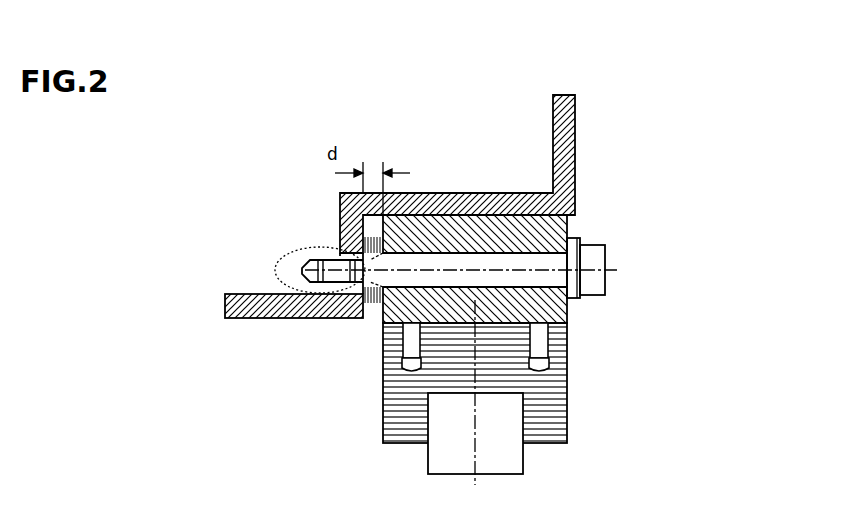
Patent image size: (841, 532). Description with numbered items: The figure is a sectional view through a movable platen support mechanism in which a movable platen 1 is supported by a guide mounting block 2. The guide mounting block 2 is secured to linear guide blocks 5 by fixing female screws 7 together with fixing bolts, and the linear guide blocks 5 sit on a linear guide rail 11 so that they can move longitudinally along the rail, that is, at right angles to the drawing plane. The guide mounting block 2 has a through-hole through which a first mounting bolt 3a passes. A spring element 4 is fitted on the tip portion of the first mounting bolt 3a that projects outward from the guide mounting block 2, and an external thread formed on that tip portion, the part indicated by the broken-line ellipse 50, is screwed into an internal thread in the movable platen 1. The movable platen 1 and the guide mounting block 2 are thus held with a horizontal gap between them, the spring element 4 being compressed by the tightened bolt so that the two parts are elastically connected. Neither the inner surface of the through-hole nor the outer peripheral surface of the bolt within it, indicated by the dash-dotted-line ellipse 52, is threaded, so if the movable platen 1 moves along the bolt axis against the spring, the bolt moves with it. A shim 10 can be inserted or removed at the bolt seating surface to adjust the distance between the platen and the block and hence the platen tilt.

The movable platen 1 is at (508, 152).
The guide mounting block 2 is at (567, 223).
The first mounting bolt 3a is at (463, 288).
The spring element 4 is at (347, 235).
The linear guide block 5 is at (552, 387).
The fixing female screw 7 is at (405, 362).
The shim 10 is at (570, 303).
The linear guide rail 11 is at (497, 462).
The broken-line ellipse 50 is at (302, 250).
The dash-dotted-line ellipse 52 is at (580, 242).